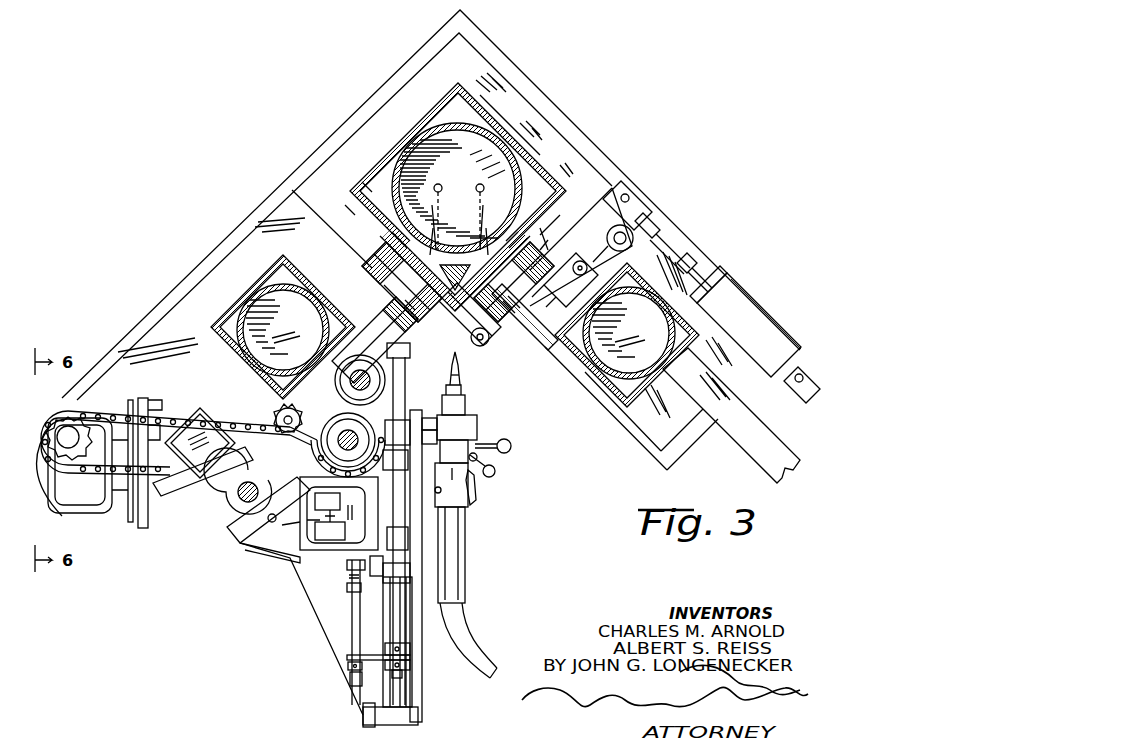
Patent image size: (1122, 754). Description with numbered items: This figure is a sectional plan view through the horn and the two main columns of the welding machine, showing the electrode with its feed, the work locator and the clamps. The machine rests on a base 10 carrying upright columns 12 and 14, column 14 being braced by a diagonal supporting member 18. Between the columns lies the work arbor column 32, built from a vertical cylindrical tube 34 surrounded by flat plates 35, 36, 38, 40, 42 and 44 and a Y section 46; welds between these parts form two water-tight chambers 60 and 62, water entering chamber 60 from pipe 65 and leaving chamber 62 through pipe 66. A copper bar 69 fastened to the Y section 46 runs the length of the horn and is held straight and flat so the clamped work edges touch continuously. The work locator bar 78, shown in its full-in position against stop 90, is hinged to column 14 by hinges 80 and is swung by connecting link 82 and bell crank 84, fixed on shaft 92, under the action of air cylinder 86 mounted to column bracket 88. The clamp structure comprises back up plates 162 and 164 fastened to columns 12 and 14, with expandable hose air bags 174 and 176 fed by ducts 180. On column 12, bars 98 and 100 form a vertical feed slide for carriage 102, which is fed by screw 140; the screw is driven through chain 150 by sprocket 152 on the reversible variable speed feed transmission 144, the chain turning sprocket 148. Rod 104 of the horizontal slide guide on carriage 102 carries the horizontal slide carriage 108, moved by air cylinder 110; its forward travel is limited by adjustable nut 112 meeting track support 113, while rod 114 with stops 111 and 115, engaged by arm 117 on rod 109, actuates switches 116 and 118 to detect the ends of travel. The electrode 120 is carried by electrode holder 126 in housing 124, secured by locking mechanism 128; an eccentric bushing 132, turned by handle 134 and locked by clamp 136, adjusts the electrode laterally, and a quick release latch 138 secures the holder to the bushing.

The base 10 is at (284, 240).
The upright column 12 is at (243, 362).
The upright column 14 is at (608, 388).
The diagonal supporting member 18 is at (752, 455).
The work arbor column 32 is at (512, 121).
The vertical cylindrical tube 34 is at (418, 142).
The flat plate 35 is at (355, 215).
The flat plate 36 is at (378, 178).
The flat plate 38 is at (522, 165).
The flat plate 40 is at (538, 222).
The flat plate 42 is at (486, 215).
The flat plate 44 is at (432, 215).
The Y section 46 is at (457, 260).
The chamber 60 is at (426, 235).
The chamber 62 is at (490, 234).
The pipe 65 is at (442, 188).
The pipe 66 is at (484, 188).
The copper bar 69 is at (375, 360).
The work locator bar 78 is at (452, 312).
The hinges 80 is at (490, 340).
The connecting link 82 is at (543, 347).
The bell crank 84 is at (590, 235).
The air cylinder 86 is at (752, 298).
The column bracket 88 is at (802, 390).
The stop 90 is at (570, 281).
The shaft 92 is at (628, 228).
The bar 98 is at (236, 500).
The bar 100 is at (385, 322).
The carriage 102 is at (263, 570).
The rod 104 is at (406, 410).
The horizontal slide carriage 108 is at (423, 448).
The rod 109 is at (400, 630).
The air cylinder 110 is at (413, 678).
The stop 111 is at (345, 588).
The adjustable nut 112 is at (411, 650).
The track support 113 is at (405, 573).
The rod 114 is at (351, 600).
The stop 115 is at (346, 666).
The switch 116 is at (325, 545).
The arm 117 is at (346, 656).
The switch 118 is at (295, 518).
The electrode 120 is at (460, 358).
The housing 124 is at (480, 430).
The electrode holder 126 is at (468, 585).
The locking mechanism 128 is at (466, 408).
The bushing 132 is at (451, 485).
The handle 134 is at (512, 447).
The clamp 136 is at (496, 471).
The quick release latch 138 is at (477, 498).
The screw 140 is at (296, 446).
The feed transmission 144 is at (89, 528).
The sprocket 148 is at (300, 463).
The chain 150 is at (118, 413).
The sprocket 152 is at (70, 450).
The back up plate 162 is at (368, 262).
The back up plate 164 is at (532, 275).
The air bag 174 is at (410, 302).
The air bag 176 is at (528, 246).
The ducts 180 is at (388, 292).